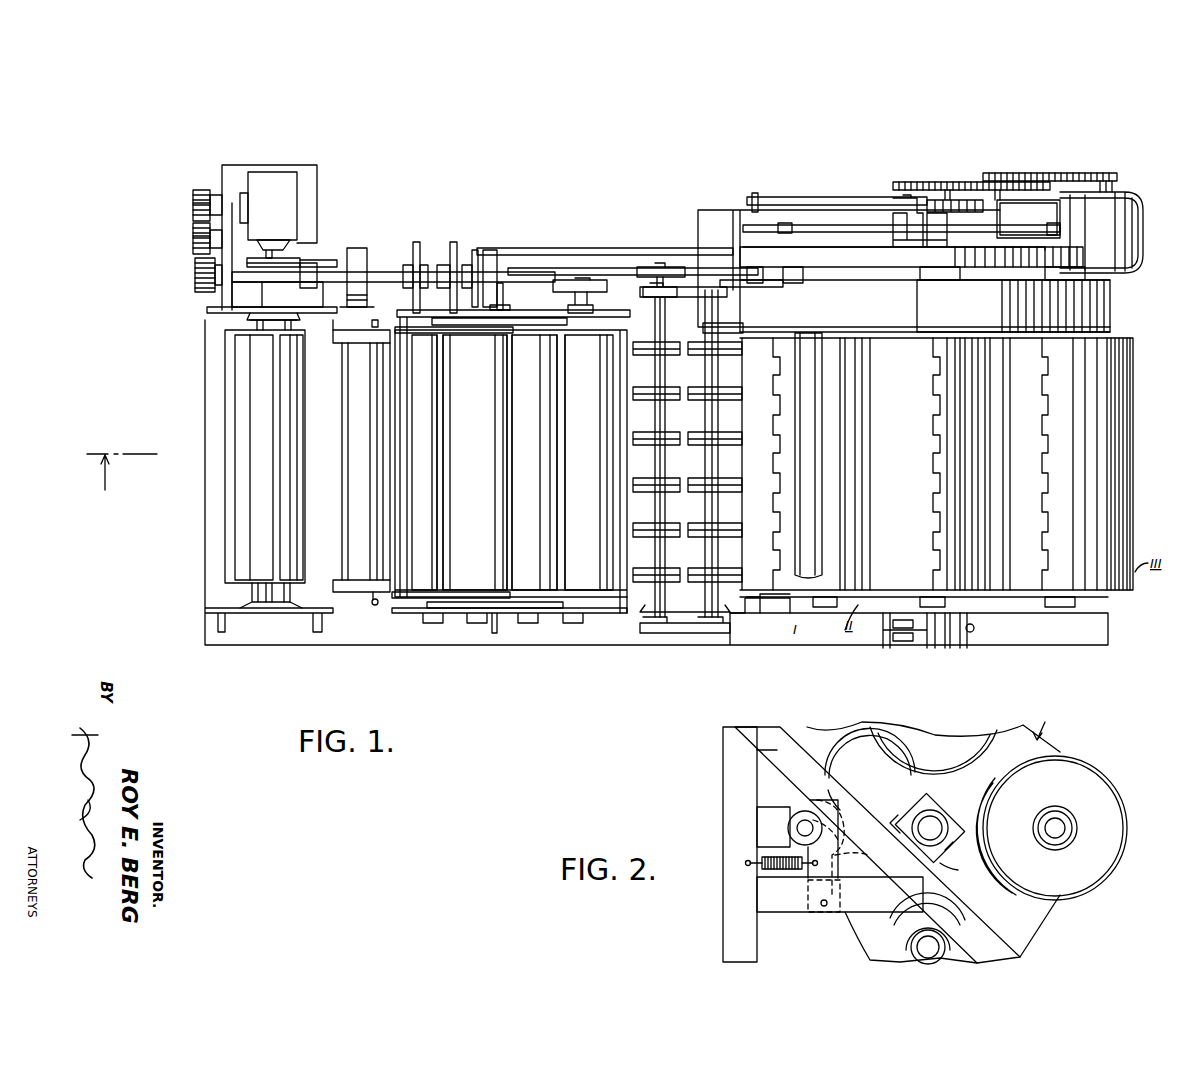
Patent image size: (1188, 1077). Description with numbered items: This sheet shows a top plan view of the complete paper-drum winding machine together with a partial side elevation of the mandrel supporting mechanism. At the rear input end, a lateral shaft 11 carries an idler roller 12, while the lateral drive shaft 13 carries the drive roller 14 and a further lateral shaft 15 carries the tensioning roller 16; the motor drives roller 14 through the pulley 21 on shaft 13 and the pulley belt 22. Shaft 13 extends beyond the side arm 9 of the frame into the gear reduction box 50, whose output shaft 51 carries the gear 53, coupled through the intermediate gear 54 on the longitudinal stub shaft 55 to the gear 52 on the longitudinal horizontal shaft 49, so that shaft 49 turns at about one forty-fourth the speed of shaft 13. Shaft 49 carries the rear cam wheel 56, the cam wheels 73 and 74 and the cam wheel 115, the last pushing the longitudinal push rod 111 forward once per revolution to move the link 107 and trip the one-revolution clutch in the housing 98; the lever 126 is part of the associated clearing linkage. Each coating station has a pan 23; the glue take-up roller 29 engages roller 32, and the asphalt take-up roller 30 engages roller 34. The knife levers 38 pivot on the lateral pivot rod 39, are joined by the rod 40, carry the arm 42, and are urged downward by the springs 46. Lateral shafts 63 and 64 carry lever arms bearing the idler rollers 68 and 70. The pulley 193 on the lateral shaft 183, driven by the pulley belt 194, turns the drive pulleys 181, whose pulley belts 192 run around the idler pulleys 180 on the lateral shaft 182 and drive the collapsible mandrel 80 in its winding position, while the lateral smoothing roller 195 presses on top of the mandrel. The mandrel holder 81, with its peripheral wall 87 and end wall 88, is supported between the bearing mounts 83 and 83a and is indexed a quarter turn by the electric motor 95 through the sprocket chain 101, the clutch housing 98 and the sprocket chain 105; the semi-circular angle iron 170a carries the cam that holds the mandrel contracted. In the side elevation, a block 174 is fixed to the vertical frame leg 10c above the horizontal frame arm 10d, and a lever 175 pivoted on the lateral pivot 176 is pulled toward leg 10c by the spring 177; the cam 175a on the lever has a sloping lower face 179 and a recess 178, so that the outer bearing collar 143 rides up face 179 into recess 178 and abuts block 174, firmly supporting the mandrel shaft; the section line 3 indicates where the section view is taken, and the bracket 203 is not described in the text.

In FIG. 1, the gear reduction box 50 is at (290, 188).
In FIG. 1, the gear 53 is at (198, 192).
In FIG. 1, the output shaft 51 is at (195, 208).
In FIG. 1, the intermediate gear 54 is at (195, 232).
In FIG. 1, the longitudinal stub shaft 55 is at (195, 245).
In FIG. 1, the gear 52 is at (200, 285).
In FIG. 1, the pulley 21 is at (258, 258).
In FIG. 1, the pulley belt 22 is at (322, 262).
In FIG. 1, the lateral drive shaft 13 is at (264, 296).
In FIG. 1, the longitudinal horizontal shaft 49 is at (392, 272).
In FIG. 1, the rear cam wheel 56 is at (357, 247).
In FIG. 1, the cam wheel 73 is at (417, 242).
In FIG. 1, the cam wheel 74 is at (452, 242).
In FIG. 1, the cam wheel 115 is at (472, 255).
In FIG. 1, the pulley belt 194 is at (537, 268).
In FIG. 1, the longitudinal push rod 111 is at (577, 248).
In FIG. 1, the flange 203 is at (598, 280).
In FIG. 1, the pulley 193 is at (645, 268).
In FIG. 1, the idler roller 12 is at (237, 555).
In FIG. 1, the drive roller 14 is at (255, 530).
In FIG. 1, the tensioning roller 16 is at (295, 545).
In FIG. 1, the lateral shaft 11 is at (250, 602).
In FIG. 1, the lateral shaft 15 is at (268, 602).
In FIG. 1, the side arm 9 is at (333, 327).
In FIG. 1, the levers 38 is at (367, 343).
In FIG. 1, the lateral pivot rod 39 is at (343, 423).
In FIG. 1, the rod 40 is at (374, 395).
In FIG. 1, the arm 42 is at (385, 425).
In FIG. 1, the springs 46 is at (373, 605).
In FIG. 1, the pan 23 is at (622, 600).
In FIG. 1, the glue take-up roller 29 is at (424, 462).
In FIG. 1, the roller 32 is at (475, 462).
In FIG. 1, the roller 34 is at (534, 462).
In FIG. 1, the asphalt take-up roller 30 is at (589, 462).
In FIG. 1, the lateral shaft 63 is at (410, 505).
In FIG. 1, the lateral shaft 64 is at (437, 445).
In FIG. 1, the idler roller 68 is at (495, 450).
In FIG. 1, the idler roller 70 is at (547, 418).
In FIG. 1, the drive pulleys 181 is at (665, 490).
In FIG. 1, the lateral shaft 182 is at (720, 557).
In FIG. 1, the idler pulleys 180 is at (732, 497).
In FIG. 1, the pulley belts 192 is at (745, 447).
In FIG. 1, the lateral shaft 183 is at (660, 630).
In FIG. 1, the block 174 is at (775, 605).
In FIG. 2, the block 174 is at (767, 812).
In FIG. 1, the vertical frame leg 10c is at (735, 645).
In FIG. 2, the vertical frame leg 10c is at (730, 760).
In FIG. 1, the collapsible mandrel 80 is at (936, 472).
In FIG. 2, the collapsible mandrel 80 is at (1122, 800).
In FIG. 1, the lateral smoothing roller 195 is at (815, 525).
In FIG. 1, the bearing mount 83 is at (955, 648).
In FIG. 2, the bearing mount 83 is at (935, 810).
In FIG. 1, the semi-circular angle iron 170a is at (892, 255).
In FIG. 1, the peripheral wall 87 is at (1083, 315).
In FIG. 1, the lever 126 is at (822, 197).
In FIG. 1, the link 107 is at (826, 222).
In FIG. 1, the sprocket chain 105 is at (960, 182).
In FIG. 1, the sprocket chain 101 is at (1072, 180).
In FIG. 1, the clutch housing 98 is at (1028, 219).
In FIG. 1, the electric motor 95 is at (1140, 258).
In FIG. 1, the bearing mount 83a is at (920, 243).
In FIG. 1, the section line 3 is at (122, 475).
In FIG. 2, the end wall 88 is at (1050, 745).
In FIG. 2, the mandrel holder 81 is at (1044, 721).
In FIG. 2, the recess 178 is at (860, 830).
In FIG. 2, the lever 175 is at (830, 805).
In FIG. 2, the cam 175a is at (870, 856).
In FIG. 2, the outer bearing collar 143 is at (795, 832).
In FIG. 2, the spring 177 is at (775, 872).
In FIG. 2, the horizontal frame arm 10d is at (772, 908).
In FIG. 2, the lower cam face 179 is at (835, 885).
In FIG. 2, the lateral pivot 176 is at (822, 906).